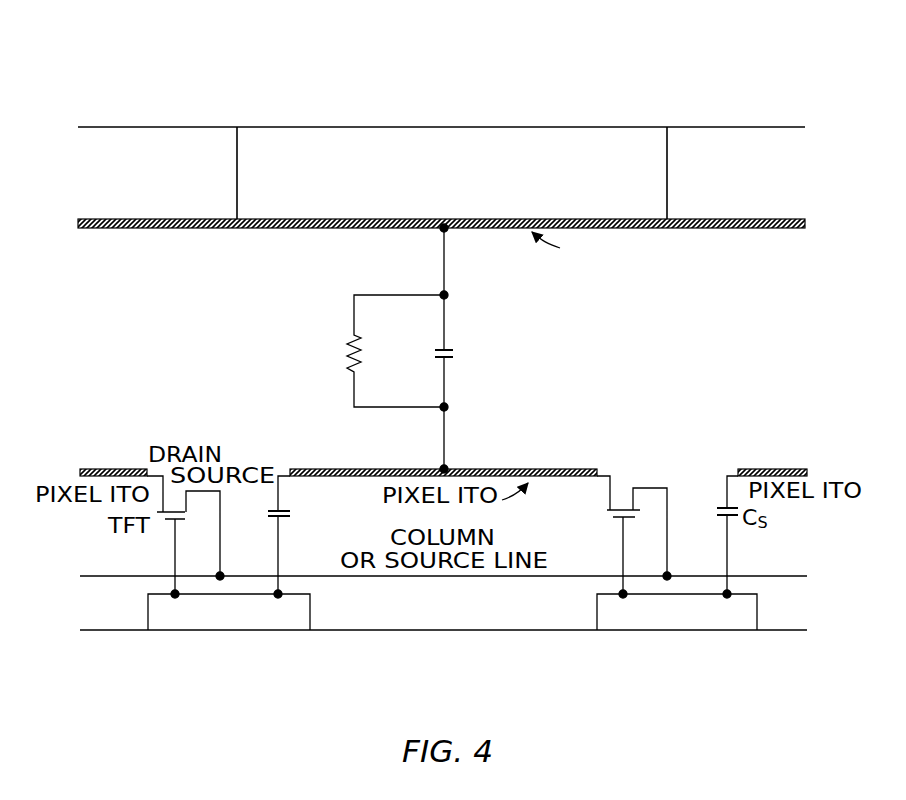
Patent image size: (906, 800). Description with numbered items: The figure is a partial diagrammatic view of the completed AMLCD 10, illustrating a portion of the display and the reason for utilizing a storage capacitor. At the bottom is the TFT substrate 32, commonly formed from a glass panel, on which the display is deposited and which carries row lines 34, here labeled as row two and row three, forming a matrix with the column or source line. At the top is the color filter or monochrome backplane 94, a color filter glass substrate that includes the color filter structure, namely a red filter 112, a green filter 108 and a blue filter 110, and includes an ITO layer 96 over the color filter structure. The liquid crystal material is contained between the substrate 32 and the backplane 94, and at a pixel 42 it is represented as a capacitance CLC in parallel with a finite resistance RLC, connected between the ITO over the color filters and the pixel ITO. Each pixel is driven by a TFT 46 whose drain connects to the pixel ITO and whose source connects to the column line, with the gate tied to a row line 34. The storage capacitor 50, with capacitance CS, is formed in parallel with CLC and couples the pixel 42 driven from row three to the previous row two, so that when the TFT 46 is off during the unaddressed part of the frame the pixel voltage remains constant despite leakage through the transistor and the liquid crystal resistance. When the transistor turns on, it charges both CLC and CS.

The AMLCD 10 is at (699, 89).
The color filter or monochrome backplane 94 is at (398, 85).
The red filter 112 is at (183, 173).
The green filter 108 is at (406, 181).
The blue filter 110 is at (718, 173).
The ITO layer 96 is at (741, 230).
The pixel 42 is at (343, 323).
The TFT 46 is at (644, 454).
The storage capacitor 50 is at (266, 513).
The row lines 34 is at (311, 612).
The substrate 32 is at (443, 661).